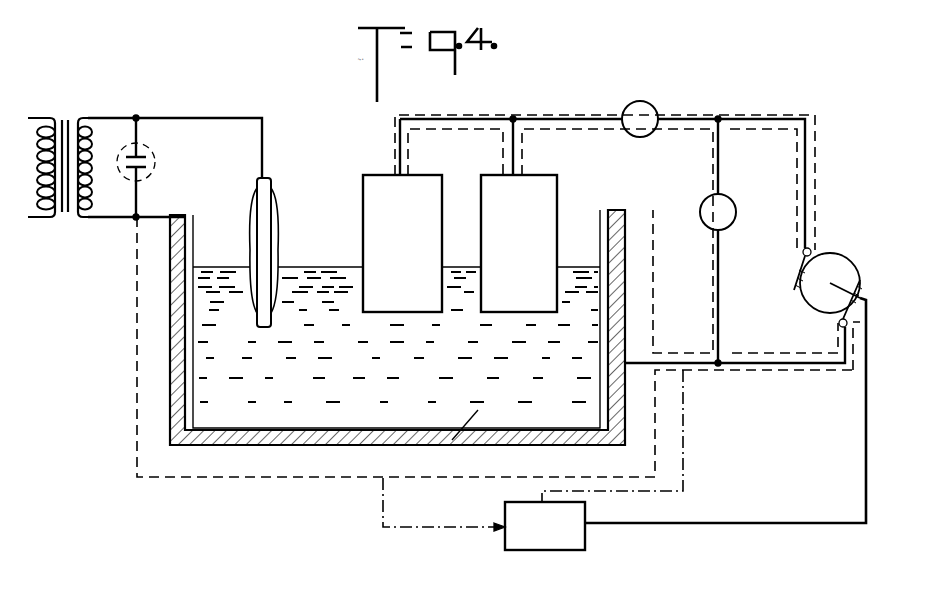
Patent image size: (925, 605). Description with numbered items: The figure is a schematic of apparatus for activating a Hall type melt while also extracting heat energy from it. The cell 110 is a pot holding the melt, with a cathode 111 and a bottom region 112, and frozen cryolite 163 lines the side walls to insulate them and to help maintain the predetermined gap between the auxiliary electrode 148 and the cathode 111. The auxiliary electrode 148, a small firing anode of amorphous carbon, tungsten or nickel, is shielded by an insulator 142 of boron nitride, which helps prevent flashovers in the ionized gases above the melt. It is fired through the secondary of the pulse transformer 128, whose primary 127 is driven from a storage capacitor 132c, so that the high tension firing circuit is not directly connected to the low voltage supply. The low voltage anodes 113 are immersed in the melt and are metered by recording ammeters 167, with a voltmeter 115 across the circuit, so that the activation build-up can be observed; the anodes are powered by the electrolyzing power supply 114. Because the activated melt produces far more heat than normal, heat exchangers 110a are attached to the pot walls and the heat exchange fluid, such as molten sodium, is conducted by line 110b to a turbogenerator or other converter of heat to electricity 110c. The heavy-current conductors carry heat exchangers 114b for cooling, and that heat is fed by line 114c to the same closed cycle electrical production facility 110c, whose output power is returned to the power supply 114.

The transformer primary winding 127 is at (52, 117).
The pulse transformer 128 is at (64, 222).
The capacitor 132c is at (149, 158).
The auxiliary electrode 148 is at (268, 190).
The insulator 142 is at (278, 256).
The anodes 113 is at (478, 168).
The recording ammeters 167 is at (650, 102).
The voltmeter 115 is at (704, 203).
The electrolyzing power supply 114 is at (827, 310).
The heat exchangers 114b is at (813, 162).
The line 114c is at (683, 443).
The cell 110 is at (236, 447).
The cathode 111 is at (340, 447).
The crucible bottom 112 is at (462, 447).
The frozen cryolite 163 is at (600, 392).
The heat exchangers 110a is at (137, 358).
The line 110b is at (452, 528).
The turbogenerator or converter of heat to electricity 110c is at (545, 526).